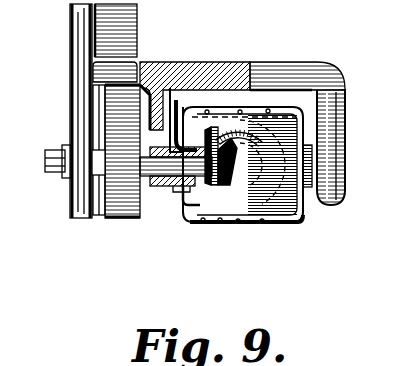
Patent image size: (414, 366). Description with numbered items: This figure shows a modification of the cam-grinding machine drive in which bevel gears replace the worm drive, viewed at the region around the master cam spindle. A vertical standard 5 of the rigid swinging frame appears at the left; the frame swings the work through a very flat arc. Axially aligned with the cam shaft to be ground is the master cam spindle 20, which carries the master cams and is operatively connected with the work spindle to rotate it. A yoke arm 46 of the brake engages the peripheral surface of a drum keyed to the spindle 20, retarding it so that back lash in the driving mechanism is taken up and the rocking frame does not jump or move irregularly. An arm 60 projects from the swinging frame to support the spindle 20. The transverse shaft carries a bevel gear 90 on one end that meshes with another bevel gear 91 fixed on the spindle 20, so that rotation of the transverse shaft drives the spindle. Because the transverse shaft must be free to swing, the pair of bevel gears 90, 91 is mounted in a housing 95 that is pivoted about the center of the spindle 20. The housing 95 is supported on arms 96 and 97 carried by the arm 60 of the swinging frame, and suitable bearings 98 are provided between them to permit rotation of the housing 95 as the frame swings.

The vertical standard 5 is at (85, 35).
The yoke arm 46 is at (126, 200).
The arm 60 is at (275, 72).
The arm 97 is at (346, 107).
The housing 95 is at (257, 222).
The arm 96 is at (176, 112).
The master cam spindle 20 is at (167, 186).
The bevel gear 90 is at (232, 133).
The bearing 98 is at (186, 192).
The bevel gear 91 is at (207, 222).